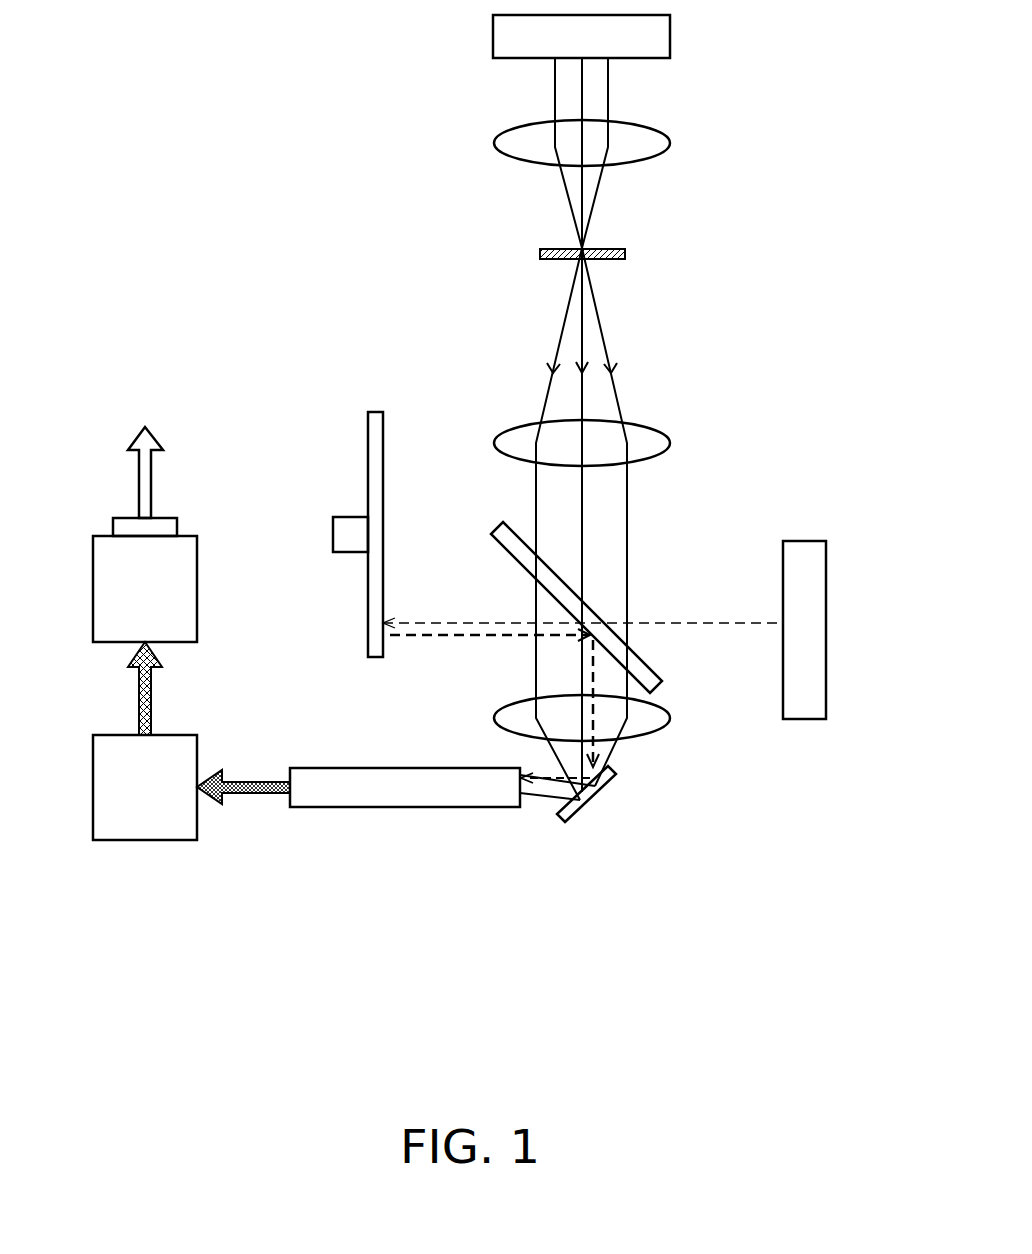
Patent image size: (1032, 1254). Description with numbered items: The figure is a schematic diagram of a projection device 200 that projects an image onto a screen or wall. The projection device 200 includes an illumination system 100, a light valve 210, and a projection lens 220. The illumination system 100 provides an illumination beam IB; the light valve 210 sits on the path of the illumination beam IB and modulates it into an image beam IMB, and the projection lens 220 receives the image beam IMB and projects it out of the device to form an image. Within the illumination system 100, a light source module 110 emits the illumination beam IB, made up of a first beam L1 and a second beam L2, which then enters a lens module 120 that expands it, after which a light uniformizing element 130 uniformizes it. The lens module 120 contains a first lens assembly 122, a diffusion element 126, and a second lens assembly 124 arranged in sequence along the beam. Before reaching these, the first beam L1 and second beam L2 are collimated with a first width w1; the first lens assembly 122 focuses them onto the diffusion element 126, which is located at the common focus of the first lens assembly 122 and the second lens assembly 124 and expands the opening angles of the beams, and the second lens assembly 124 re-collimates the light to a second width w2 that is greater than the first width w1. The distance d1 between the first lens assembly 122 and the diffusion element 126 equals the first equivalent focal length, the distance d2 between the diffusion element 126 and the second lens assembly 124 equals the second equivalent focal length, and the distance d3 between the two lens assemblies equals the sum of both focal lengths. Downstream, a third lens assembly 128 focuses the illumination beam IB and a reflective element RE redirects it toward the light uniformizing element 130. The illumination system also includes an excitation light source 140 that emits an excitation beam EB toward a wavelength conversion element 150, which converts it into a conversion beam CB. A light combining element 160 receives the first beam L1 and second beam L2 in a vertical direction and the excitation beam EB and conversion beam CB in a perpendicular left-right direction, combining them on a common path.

The illumination system 100 is at (246, 87).
The light source module 110 is at (665, 38).
The lens module 120 is at (688, 593).
The first lens assembly 122 is at (640, 148).
The second lens assembly 124 is at (655, 443).
The diffusion element 126 is at (625, 254).
The third lens assembly 128 is at (640, 718).
The light uniformizing element 130 is at (395, 795).
The excitation light source 140 is at (803, 705).
The wavelength conversion element 150 is at (368, 418).
The light combining element 160 is at (656, 680).
The projection device 200 is at (112, 1047).
The light valve 210 is at (140, 825).
The projection lens 220 is at (167, 590).
The illumination beam IB is at (246, 797).
The image beam IMB is at (150, 690).
The conversion beam CB is at (432, 640).
The excitation beam EB is at (718, 620).
The reflective element RE is at (595, 792).
The first beam L1 is at (610, 105).
The second beam L2 is at (637, 739).
The first width w1 is at (655, 85).
The second width w2 is at (677, 492).
The distance between first lens assembly and diffusion element d1 is at (475, 143).
The distance between diffusion element and second lens assembly d2 is at (475, 253).
The distance between first lens assembly and second lens assembly d3 is at (415, 143).